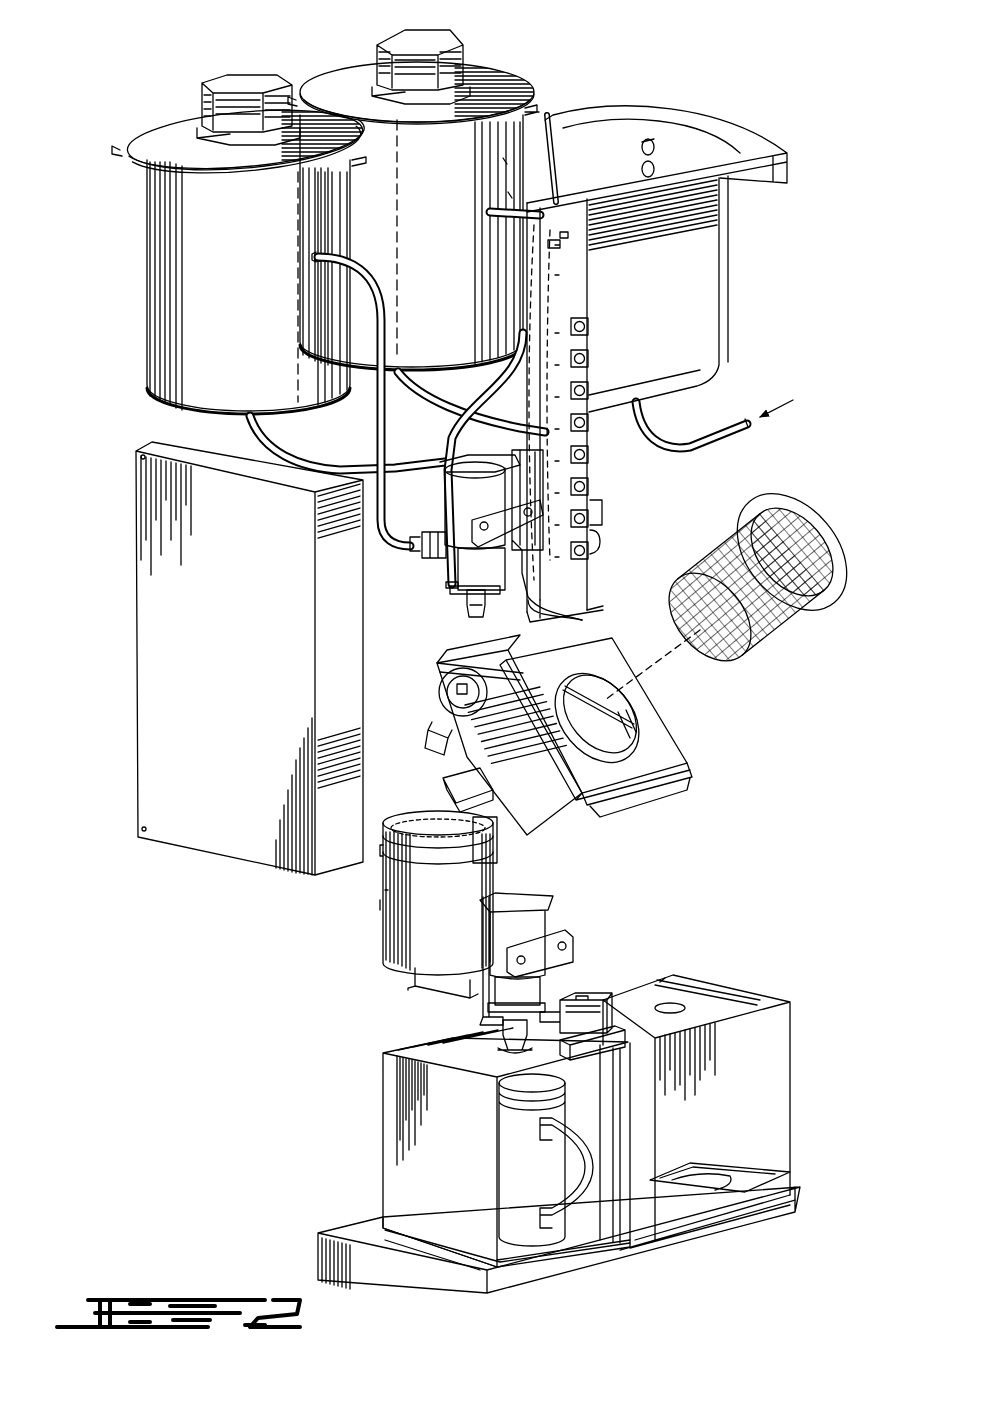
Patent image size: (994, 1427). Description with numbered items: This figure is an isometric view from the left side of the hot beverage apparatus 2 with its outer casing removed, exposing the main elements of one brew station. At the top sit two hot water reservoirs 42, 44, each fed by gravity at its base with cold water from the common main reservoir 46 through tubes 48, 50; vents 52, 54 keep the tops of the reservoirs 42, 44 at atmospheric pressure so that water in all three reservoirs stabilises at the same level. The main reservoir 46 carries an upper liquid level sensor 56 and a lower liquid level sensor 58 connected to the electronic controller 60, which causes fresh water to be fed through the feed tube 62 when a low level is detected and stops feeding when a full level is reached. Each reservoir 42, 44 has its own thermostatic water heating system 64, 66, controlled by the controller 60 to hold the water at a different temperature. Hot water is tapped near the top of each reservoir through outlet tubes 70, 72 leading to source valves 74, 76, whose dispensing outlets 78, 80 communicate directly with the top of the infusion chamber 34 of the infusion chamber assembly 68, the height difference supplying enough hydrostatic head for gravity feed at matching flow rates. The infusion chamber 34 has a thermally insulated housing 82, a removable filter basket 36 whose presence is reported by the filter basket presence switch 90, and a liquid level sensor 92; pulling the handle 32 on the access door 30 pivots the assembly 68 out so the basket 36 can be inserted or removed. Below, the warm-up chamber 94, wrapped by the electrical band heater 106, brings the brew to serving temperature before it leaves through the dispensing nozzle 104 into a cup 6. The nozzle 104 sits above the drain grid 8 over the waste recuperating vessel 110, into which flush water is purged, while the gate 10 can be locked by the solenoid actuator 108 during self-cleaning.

The apparatus 2 is at (116, 358).
The cup 6 is at (522, 1162).
The drain grid 8 is at (670, 1174).
The gate 10 is at (583, 1088).
The infusion chamber access door 30 is at (615, 828).
The handle 32 is at (668, 812).
The infusion chamber 34 is at (655, 786).
The filter basket 36 is at (828, 515).
The hot water reservoir 42 is at (190, 212).
The hot water reservoir 44 is at (547, 117).
The common main reservoir 46 is at (722, 263).
The tube 48 is at (205, 432).
The tube 50 is at (444, 392).
The vent 52 is at (192, 125).
The vent 54 is at (367, 78).
The upper liquid level sensor 56 is at (505, 160).
The lower liquid level sensor 58 is at (510, 195).
The electronic controller 60 is at (185, 625).
The feed tube 62 is at (712, 418).
The thermostatic water heating system 64 is at (240, 84).
The thermostatic water heating system 66 is at (427, 43).
The infusion chamber assembly 68 is at (692, 706).
The outlet tube 70 is at (374, 521).
The outlet tube 72 is at (652, 140).
The source valve 74 is at (465, 566).
The source valve 76 is at (535, 478).
The dispensing outlet 78 is at (474, 612).
The dispensing outlet 80 is at (603, 610).
The thermally insulated housing 82 is at (578, 822).
The filter basket presence switch 90 is at (685, 756).
The liquid level sensor 92 is at (640, 718).
The warm-up chamber 94 is at (380, 940).
The dispensing nozzle 104 is at (490, 1077).
The electrical band heater 106 is at (430, 890).
The solenoid actuator 108 is at (603, 997).
The waste recuperating vessel 110 is at (433, 1293).